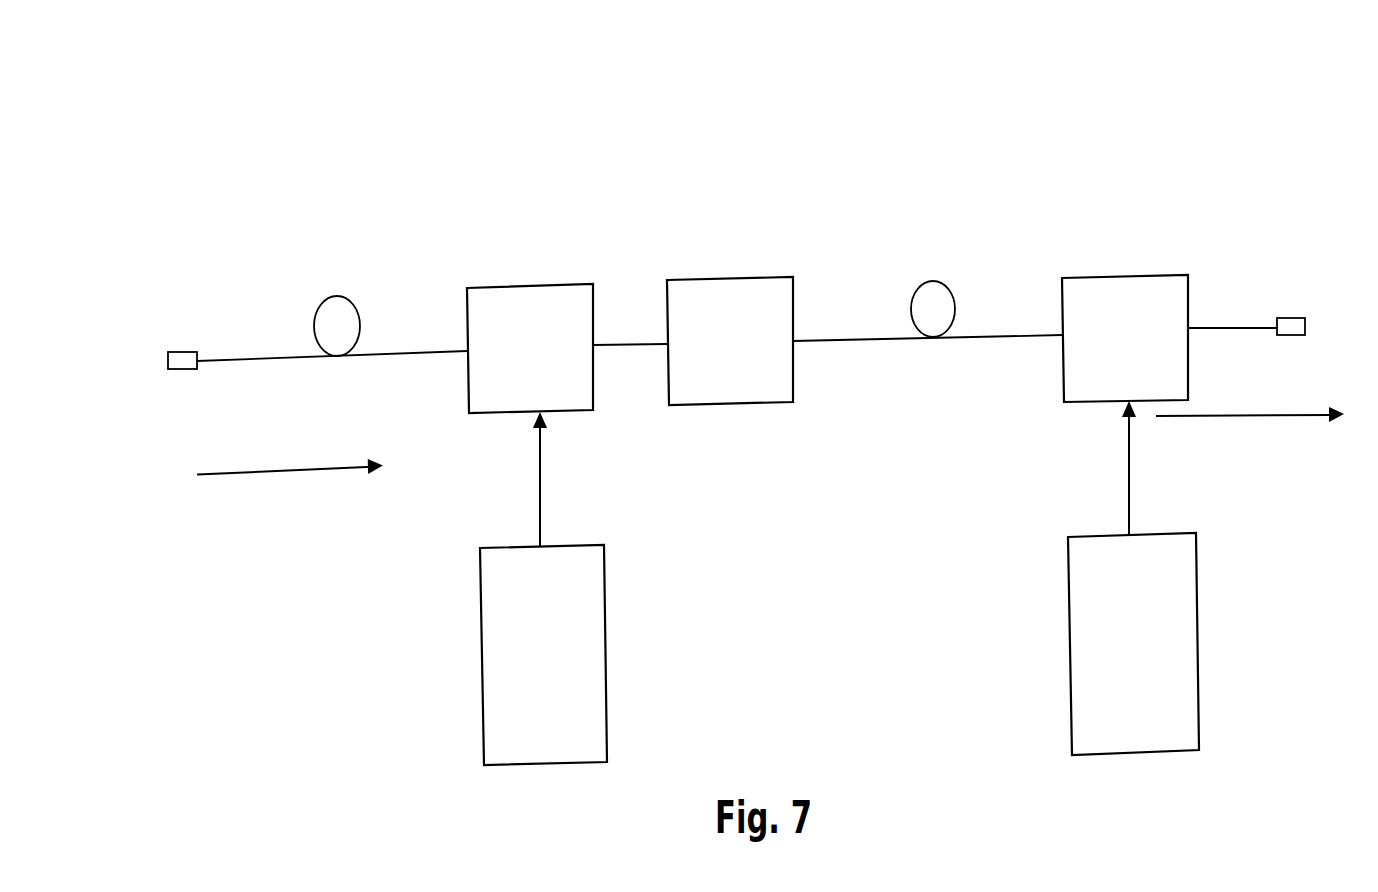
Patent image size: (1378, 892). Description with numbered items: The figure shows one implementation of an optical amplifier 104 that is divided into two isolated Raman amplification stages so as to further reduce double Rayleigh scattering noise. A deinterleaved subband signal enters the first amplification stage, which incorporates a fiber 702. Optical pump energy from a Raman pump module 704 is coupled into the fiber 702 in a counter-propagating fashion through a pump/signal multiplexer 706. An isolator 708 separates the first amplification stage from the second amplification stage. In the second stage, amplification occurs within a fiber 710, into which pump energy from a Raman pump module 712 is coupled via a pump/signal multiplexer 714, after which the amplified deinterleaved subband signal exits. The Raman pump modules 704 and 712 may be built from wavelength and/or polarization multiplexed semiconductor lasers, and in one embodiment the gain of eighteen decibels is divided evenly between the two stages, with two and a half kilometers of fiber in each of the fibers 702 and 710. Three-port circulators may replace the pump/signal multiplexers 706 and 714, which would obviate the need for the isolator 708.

The optical amplifier 104 is at (420, 128).
The fiber 702 is at (352, 313).
The Raman pump module 704 is at (560, 552).
The pump/signal multiplexer 706 is at (538, 288).
The isolator 708 is at (742, 283).
The fiber 710 is at (953, 303).
The Raman pump module 712 is at (1178, 540).
The pump/signal multiplexer 714 is at (1133, 282).